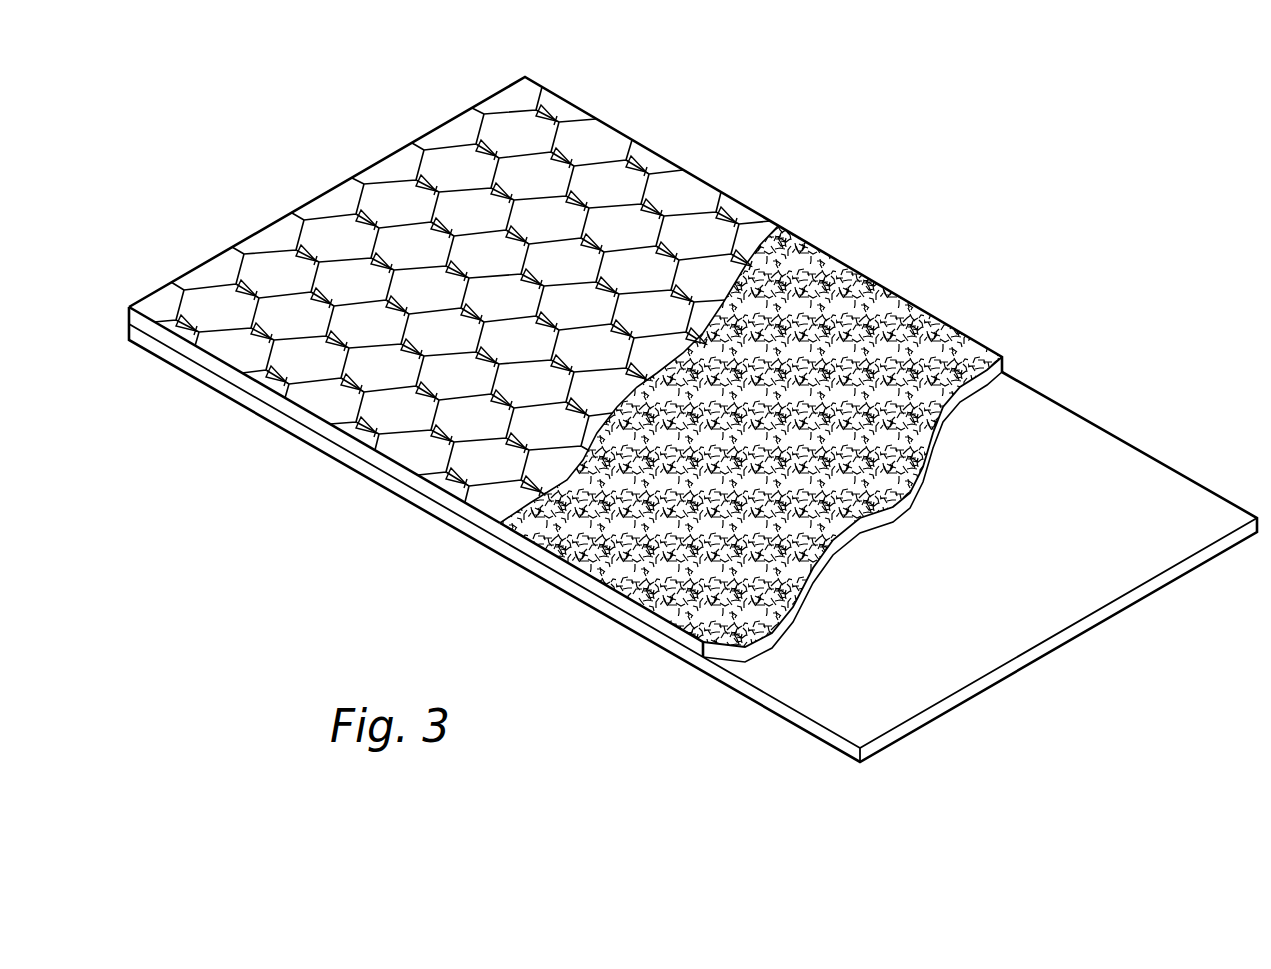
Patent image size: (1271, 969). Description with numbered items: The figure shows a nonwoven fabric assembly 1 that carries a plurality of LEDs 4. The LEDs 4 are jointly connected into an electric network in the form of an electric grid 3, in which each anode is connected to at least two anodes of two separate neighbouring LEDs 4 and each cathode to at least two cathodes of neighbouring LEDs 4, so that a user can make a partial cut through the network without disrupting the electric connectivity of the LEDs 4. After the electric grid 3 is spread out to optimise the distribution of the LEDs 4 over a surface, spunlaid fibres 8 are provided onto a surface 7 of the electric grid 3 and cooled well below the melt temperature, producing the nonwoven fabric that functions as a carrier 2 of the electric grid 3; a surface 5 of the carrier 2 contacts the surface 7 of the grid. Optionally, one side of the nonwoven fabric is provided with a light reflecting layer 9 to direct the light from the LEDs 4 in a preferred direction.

The composite panel 1 is at (1102, 170).
The carrier 2 is at (890, 310).
The electric grid 3 is at (680, 190).
The LEDs 4 is at (541, 112).
The surface of the carrier 5 is at (627, 593).
The surface of the electric grid 7 is at (445, 506).
The spunlaid fibres 8 is at (885, 497).
The light reflecting layer 9 is at (1115, 455).